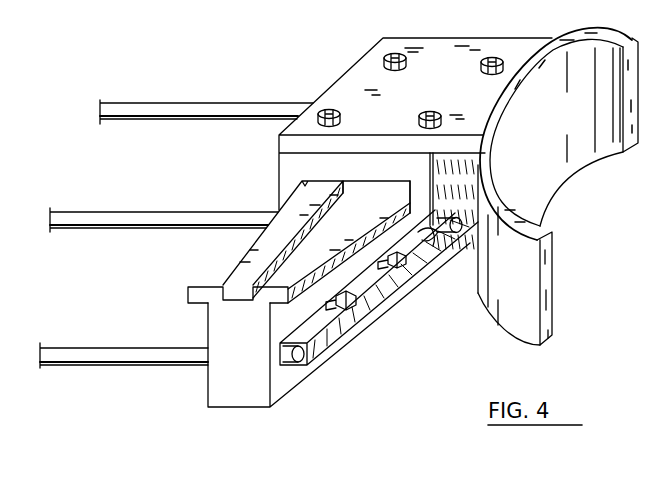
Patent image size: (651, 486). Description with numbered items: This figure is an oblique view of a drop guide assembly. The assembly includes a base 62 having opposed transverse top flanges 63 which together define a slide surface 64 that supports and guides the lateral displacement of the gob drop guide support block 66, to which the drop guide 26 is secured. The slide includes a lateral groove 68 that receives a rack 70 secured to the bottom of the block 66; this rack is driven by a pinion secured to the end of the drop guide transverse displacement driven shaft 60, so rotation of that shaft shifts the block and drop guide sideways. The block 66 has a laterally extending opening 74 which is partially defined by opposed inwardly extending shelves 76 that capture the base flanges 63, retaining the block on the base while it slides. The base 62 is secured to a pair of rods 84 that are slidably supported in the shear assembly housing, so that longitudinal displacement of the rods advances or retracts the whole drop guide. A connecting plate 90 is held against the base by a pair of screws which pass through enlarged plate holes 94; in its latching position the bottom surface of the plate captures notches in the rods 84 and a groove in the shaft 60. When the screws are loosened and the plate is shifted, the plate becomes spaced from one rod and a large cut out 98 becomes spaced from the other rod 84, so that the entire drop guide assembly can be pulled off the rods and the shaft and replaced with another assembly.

The drop guide 26 is at (581, 132).
The drop guide transverse displacement driven shaft 60 is at (165, 112).
The base 62 is at (233, 392).
The top flanges 63 is at (202, 301).
The slide surface 64 is at (218, 269).
The gob drop guide support block 66 is at (441, 102).
The lateral groove 68 is at (283, 237).
The rack 70 is at (355, 190).
The laterally extending opening 74 is at (412, 207).
The inwardly extending shelves 76 is at (445, 243).
The rods 84 is at (170, 224).
The connecting plate 90 is at (380, 270).
The enlarged plate holes 94 is at (347, 313).
The large cut out 98 is at (422, 248).